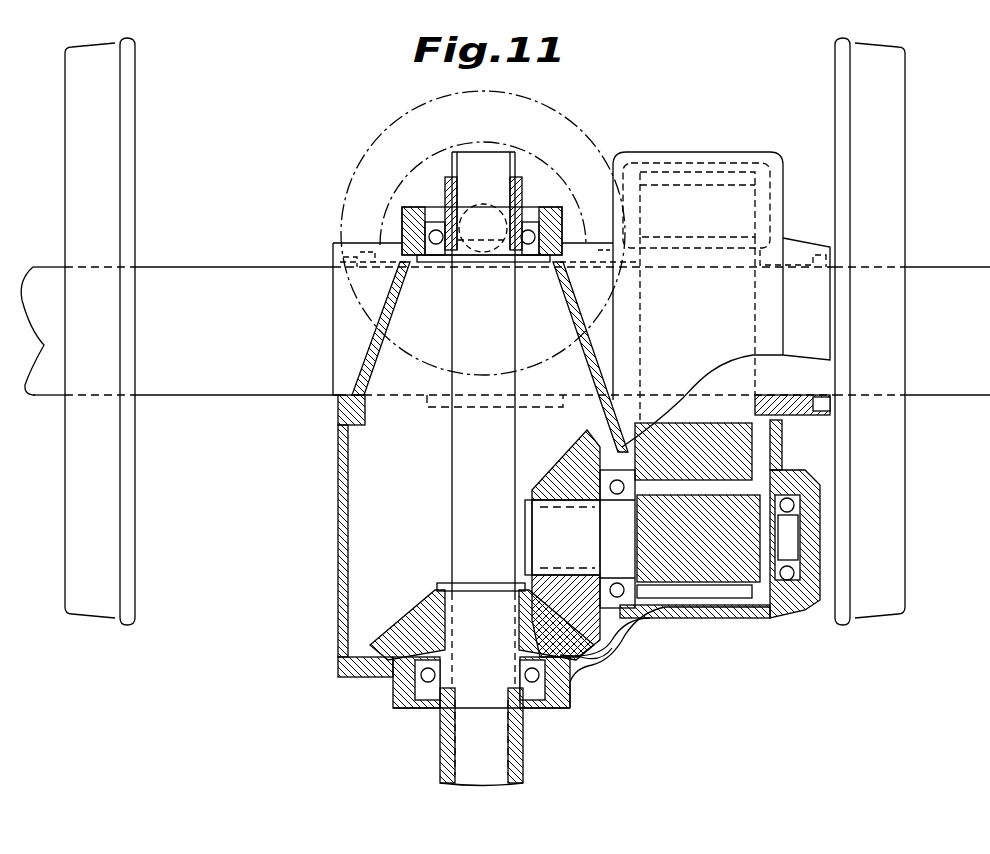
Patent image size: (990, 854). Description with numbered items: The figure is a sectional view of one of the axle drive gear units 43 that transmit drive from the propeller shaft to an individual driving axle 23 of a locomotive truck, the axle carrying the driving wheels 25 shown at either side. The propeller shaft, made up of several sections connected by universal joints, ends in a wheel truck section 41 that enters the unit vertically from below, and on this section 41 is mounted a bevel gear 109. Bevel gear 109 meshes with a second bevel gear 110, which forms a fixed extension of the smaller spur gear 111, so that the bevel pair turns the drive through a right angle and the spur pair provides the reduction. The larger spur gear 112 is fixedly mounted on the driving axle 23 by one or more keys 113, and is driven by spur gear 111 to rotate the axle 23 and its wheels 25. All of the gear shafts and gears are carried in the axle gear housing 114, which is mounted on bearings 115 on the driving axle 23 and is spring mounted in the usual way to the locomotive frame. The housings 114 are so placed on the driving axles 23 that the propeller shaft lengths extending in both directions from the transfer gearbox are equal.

The driving axle 23 is at (950, 273).
The driving wheel 25 is at (898, 140).
The propeller shaft section 41 is at (473, 732).
The axle drive gear unit 43 is at (653, 618).
The bevel gear 109 is at (428, 618).
The bevel gear 110 is at (570, 458).
The spur gear 111 is at (730, 592).
The spur gear 112 is at (725, 175).
The key 113 is at (730, 238).
The axle gear housing 114 is at (342, 540).
The bearing 115 is at (370, 258).